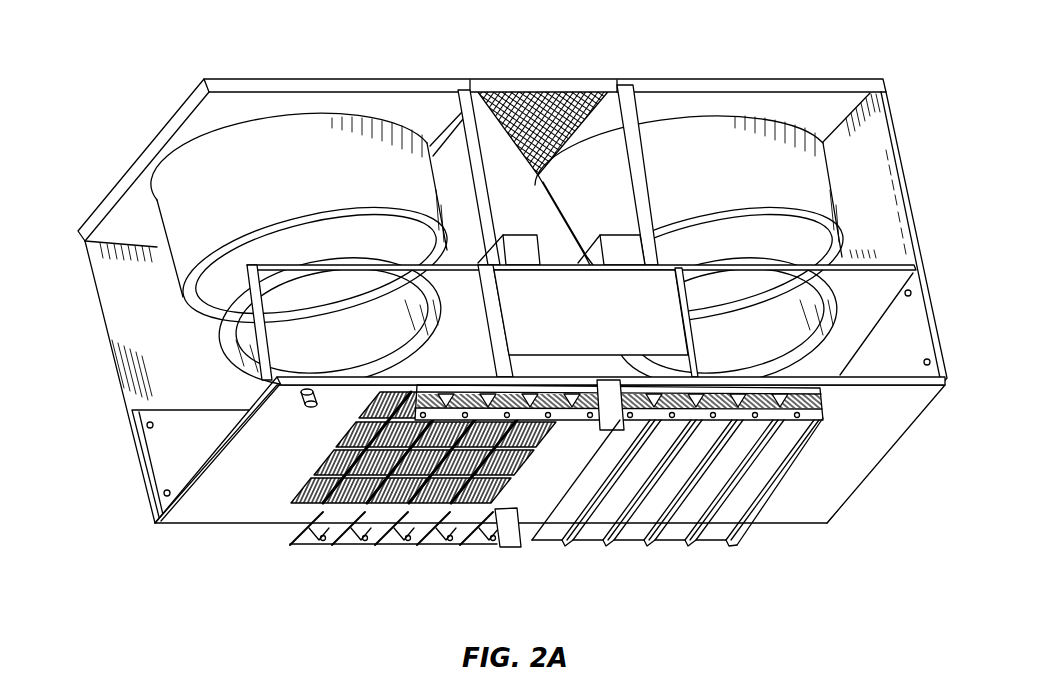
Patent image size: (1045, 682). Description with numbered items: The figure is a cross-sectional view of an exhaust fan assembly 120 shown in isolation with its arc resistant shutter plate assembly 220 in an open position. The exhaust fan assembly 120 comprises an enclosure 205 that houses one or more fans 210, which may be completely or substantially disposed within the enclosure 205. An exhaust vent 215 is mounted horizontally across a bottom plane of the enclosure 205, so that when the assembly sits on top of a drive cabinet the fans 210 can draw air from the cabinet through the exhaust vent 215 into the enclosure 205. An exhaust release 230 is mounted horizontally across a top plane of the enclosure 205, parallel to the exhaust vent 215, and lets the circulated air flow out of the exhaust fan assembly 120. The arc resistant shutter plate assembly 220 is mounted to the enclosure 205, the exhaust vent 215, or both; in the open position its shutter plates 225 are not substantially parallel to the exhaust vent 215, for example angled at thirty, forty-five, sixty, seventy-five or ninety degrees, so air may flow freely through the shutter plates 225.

The exhaust fan assembly 120 is at (490, 312).
The enclosure 205 is at (112, 350).
The fans 210 is at (197, 190).
The exhaust vent 215 is at (293, 507).
The arc resistant shutter plate assembly 220 is at (530, 497).
The shutter plates 225 is at (653, 541).
The exhaust release 230 is at (557, 86).